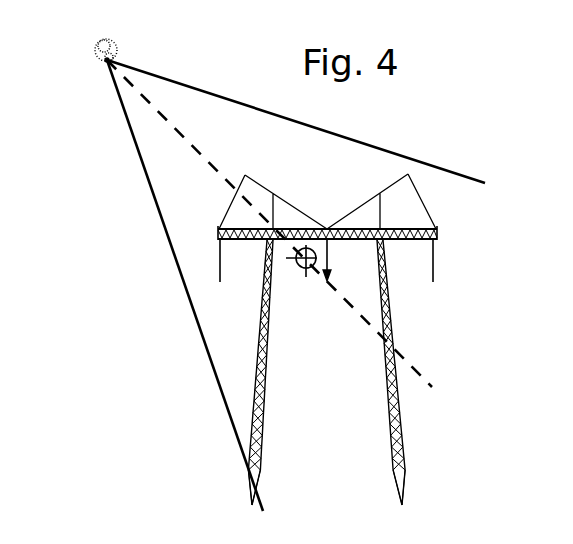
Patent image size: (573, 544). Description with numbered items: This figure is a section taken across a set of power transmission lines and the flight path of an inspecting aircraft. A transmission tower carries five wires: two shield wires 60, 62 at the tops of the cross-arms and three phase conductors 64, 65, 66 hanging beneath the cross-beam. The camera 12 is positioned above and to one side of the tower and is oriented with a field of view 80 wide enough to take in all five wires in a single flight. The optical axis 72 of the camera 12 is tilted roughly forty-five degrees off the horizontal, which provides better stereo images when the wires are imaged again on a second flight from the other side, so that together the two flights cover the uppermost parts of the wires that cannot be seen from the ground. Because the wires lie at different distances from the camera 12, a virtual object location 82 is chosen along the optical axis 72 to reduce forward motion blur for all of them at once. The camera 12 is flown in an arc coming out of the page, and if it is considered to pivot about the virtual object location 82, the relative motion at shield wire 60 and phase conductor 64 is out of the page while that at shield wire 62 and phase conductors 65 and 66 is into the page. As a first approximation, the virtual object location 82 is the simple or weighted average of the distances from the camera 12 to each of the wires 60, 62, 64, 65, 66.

The camera 12 is at (121, 46).
The field of view 80 is at (201, 90).
The optical axis 72 is at (414, 360).
The shield wire 60 is at (245, 175).
The shield wire 62 is at (408, 174).
The phase conductor 64 is at (220, 300).
The phase conductor 66 is at (433, 300).
The phase conductor 65 is at (333, 276).
The virtual object location 82 is at (307, 279).